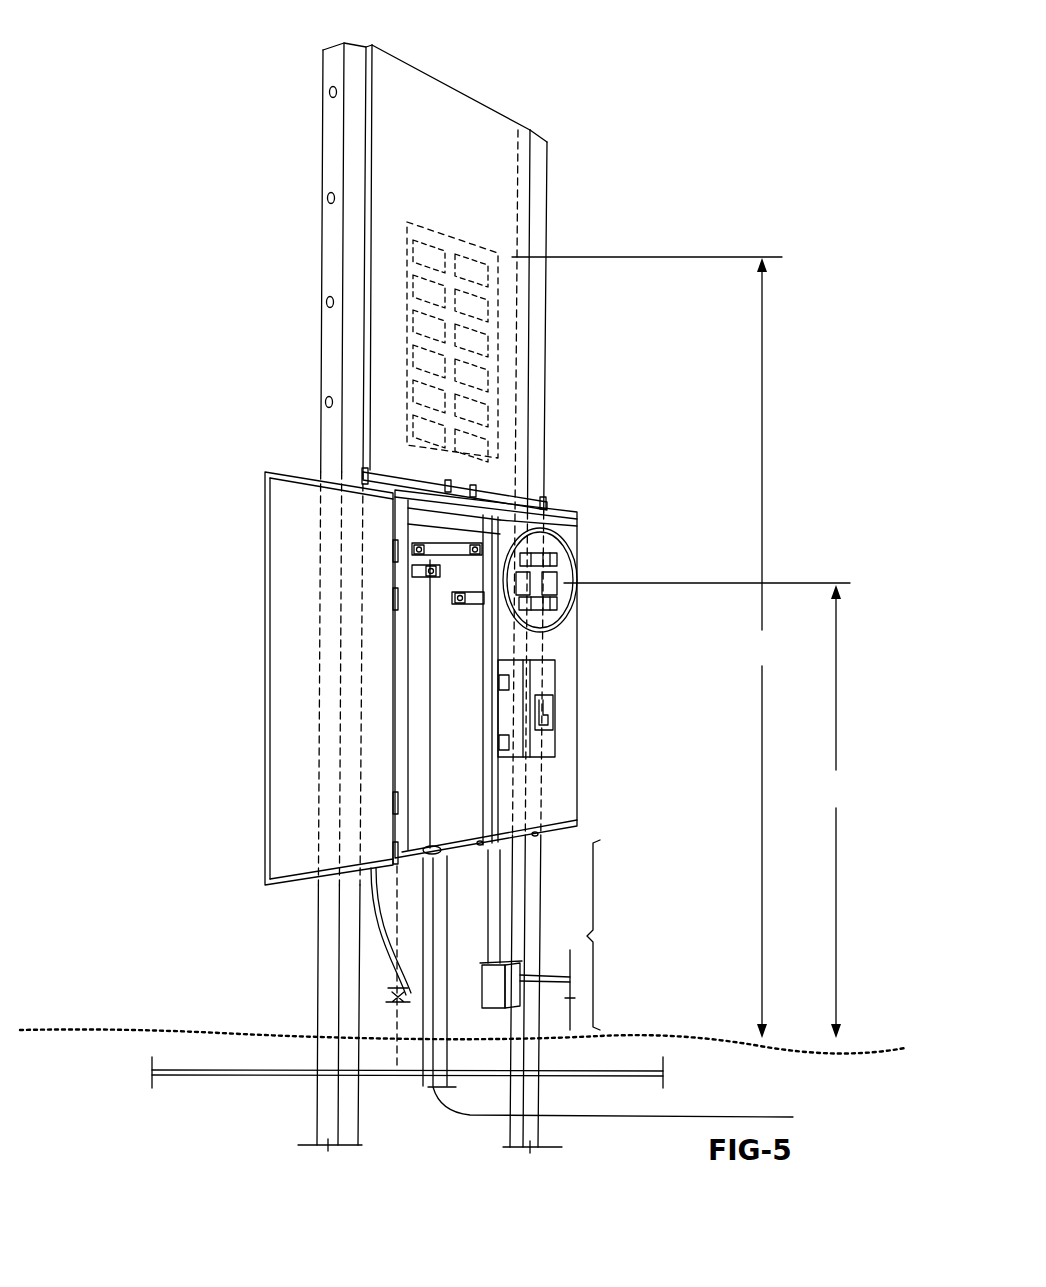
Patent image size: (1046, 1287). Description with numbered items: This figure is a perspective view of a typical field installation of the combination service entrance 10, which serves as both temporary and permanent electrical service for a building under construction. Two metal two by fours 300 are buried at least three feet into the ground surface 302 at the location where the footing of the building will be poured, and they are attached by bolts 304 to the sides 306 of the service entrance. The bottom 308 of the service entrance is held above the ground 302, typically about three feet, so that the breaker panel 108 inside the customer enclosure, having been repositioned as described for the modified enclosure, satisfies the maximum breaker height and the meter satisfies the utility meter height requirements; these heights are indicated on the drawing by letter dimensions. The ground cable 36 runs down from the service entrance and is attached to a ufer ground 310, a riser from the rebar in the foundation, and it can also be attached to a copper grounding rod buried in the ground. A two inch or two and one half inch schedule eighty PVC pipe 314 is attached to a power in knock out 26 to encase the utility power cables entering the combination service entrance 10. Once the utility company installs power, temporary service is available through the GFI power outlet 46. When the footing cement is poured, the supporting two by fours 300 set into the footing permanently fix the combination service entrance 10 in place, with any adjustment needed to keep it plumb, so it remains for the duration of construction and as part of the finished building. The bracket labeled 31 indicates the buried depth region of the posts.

The combination service entrance 10 is at (668, 192).
The power in knock out 26 is at (262, 867).
The buried depth 31 is at (611, 935).
The ground cable 36 is at (372, 925).
The GFI power outlet 46 is at (495, 1000).
The breaker panel 108 is at (478, 352).
The metal two by fours 300 is at (530, 197).
The ground surface 302 is at (136, 1042).
The bolts 304 is at (327, 201).
The sides of the service entrance 306 is at (372, 84).
The bottom of the service entrance 308 is at (568, 836).
The ufer ground 310 is at (295, 1076).
The PVC schedule 80 pipe 314 is at (420, 938).